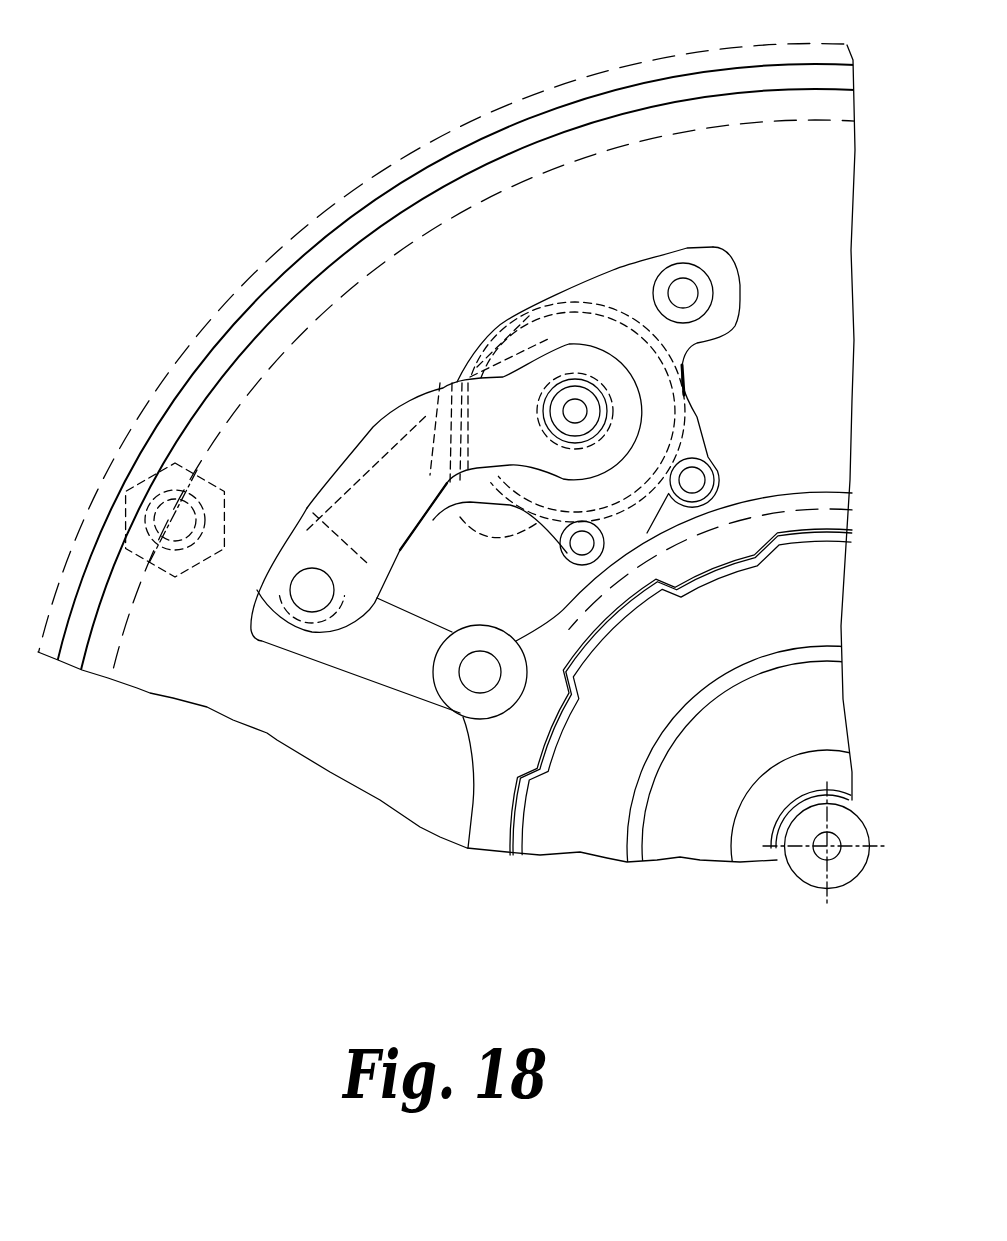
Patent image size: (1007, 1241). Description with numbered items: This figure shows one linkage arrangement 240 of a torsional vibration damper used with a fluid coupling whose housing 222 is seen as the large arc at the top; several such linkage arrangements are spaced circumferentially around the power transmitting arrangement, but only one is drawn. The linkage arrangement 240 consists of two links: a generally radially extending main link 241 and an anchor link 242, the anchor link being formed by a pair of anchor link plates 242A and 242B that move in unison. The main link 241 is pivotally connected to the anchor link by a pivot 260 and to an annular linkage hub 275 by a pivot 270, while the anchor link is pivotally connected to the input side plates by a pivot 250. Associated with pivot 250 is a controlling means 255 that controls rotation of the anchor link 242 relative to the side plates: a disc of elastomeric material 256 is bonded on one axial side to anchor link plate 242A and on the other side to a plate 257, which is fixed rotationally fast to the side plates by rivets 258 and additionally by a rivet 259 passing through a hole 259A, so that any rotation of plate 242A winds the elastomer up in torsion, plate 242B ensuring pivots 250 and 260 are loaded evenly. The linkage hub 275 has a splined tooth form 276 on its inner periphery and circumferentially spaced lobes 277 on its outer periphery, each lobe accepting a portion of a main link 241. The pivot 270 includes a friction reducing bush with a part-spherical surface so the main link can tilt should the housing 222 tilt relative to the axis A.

The housing 222 is at (646, 97).
The linkage arrangement 240 is at (424, 362).
The main link 241 is at (388, 661).
The anchor link 242 is at (332, 456).
The anchor link plate 242A is at (432, 522).
The anchor link plate 242B is at (393, 428).
The pivot 250 is at (573, 408).
The controlling means 255 is at (705, 396).
The disc of elastomeric material 256 is at (607, 322).
The plate 257 is at (723, 320).
The rivets 258 is at (698, 482).
The rivet 259 is at (681, 296).
The hole 259A is at (683, 290).
The pivot 260 is at (294, 592).
The pivot 270 is at (477, 677).
The linkage hub 275 is at (492, 738).
The splined tooth form 276 is at (602, 628).
The lobes 277 is at (518, 637).
The axis A is at (822, 851).